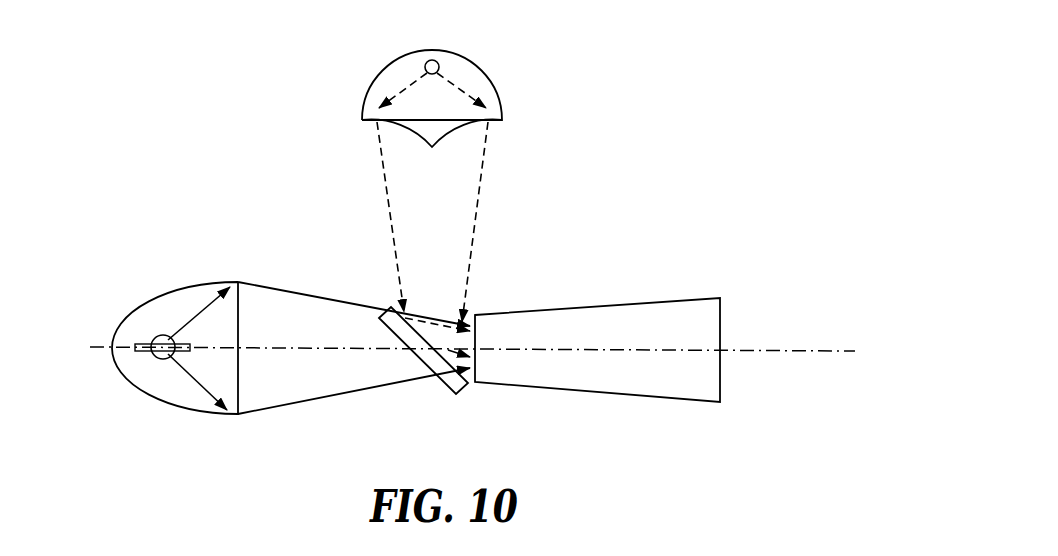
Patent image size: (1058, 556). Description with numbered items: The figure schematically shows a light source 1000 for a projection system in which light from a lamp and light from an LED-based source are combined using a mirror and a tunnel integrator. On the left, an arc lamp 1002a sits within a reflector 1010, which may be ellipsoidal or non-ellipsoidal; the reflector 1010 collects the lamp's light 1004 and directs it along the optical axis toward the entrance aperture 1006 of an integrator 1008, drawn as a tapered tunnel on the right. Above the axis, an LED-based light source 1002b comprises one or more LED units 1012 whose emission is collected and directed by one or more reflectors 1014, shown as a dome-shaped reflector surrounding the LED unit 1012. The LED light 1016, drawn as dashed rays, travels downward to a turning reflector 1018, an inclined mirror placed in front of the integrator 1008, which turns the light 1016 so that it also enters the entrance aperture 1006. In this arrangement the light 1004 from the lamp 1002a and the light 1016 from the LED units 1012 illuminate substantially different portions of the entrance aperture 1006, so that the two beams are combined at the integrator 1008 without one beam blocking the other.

The light source 1000 is at (231, 151).
The arc lamp 1002a is at (152, 356).
The LED-based light source 1002b is at (461, 86).
The light 1004 is at (343, 396).
The entrance aperture 1006 is at (468, 388).
The integrator 1008 is at (550, 308).
The reflector 1010 is at (156, 302).
The LED unit 1012 is at (437, 62).
The reflector 1014 is at (380, 74).
The light 1016 is at (477, 198).
The turning reflector 1018 is at (388, 307).